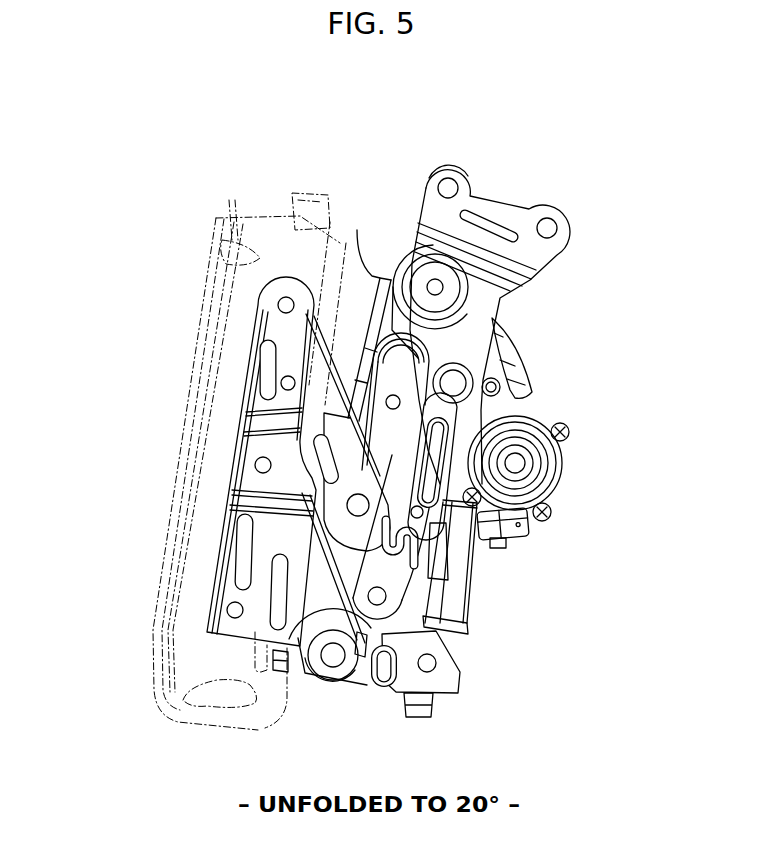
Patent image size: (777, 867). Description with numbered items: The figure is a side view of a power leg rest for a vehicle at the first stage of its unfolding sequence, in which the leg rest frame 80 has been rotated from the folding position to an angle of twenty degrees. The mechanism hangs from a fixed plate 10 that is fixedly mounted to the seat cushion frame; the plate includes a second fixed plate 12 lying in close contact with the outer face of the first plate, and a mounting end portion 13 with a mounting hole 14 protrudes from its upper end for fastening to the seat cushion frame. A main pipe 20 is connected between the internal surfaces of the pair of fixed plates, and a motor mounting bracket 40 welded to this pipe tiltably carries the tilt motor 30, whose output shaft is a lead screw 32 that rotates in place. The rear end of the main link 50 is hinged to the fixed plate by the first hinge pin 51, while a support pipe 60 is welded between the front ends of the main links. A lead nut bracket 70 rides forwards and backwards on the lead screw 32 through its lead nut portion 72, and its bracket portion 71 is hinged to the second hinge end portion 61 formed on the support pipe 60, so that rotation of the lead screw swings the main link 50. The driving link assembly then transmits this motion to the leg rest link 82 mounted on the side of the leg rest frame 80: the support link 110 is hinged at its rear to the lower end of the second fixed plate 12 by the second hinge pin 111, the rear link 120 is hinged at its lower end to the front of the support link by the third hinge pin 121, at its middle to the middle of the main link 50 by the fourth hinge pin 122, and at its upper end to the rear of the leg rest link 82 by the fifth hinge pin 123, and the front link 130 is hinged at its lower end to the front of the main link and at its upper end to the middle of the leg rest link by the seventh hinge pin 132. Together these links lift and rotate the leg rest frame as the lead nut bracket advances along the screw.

The fixed plate 10 is at (421, 197).
The second fixed plate 12 is at (473, 328).
The mounting end portion 13 is at (443, 167).
The mounting hole 14 is at (451, 186).
The main pipe 20 is at (454, 263).
The tilt motor 30 is at (563, 467).
The lead screw 32 is at (430, 603).
The motor mounting bracket 40 is at (514, 360).
The main link 50 is at (370, 295).
The first hinge pin 51 is at (443, 286).
The support pipe 60 is at (377, 690).
The second hinge end portion 61 is at (394, 692).
The lead nut bracket 70 is at (472, 655).
The bracket portion 71 is at (482, 547).
The lead nut portion 72 is at (440, 557).
The leg rest frame 80 is at (172, 522).
The leg rest link 82 is at (245, 476).
The support link 110 is at (524, 535).
The second hinge pin 111 is at (500, 389).
The rear link 120 is at (325, 423).
The third hinge pin 121 is at (386, 600).
The fourth hinge pin 122 is at (300, 518).
The fifth hinge pin 123 is at (279, 305).
The front link 130 is at (313, 610).
The seventh hinge pin 132 is at (256, 460).